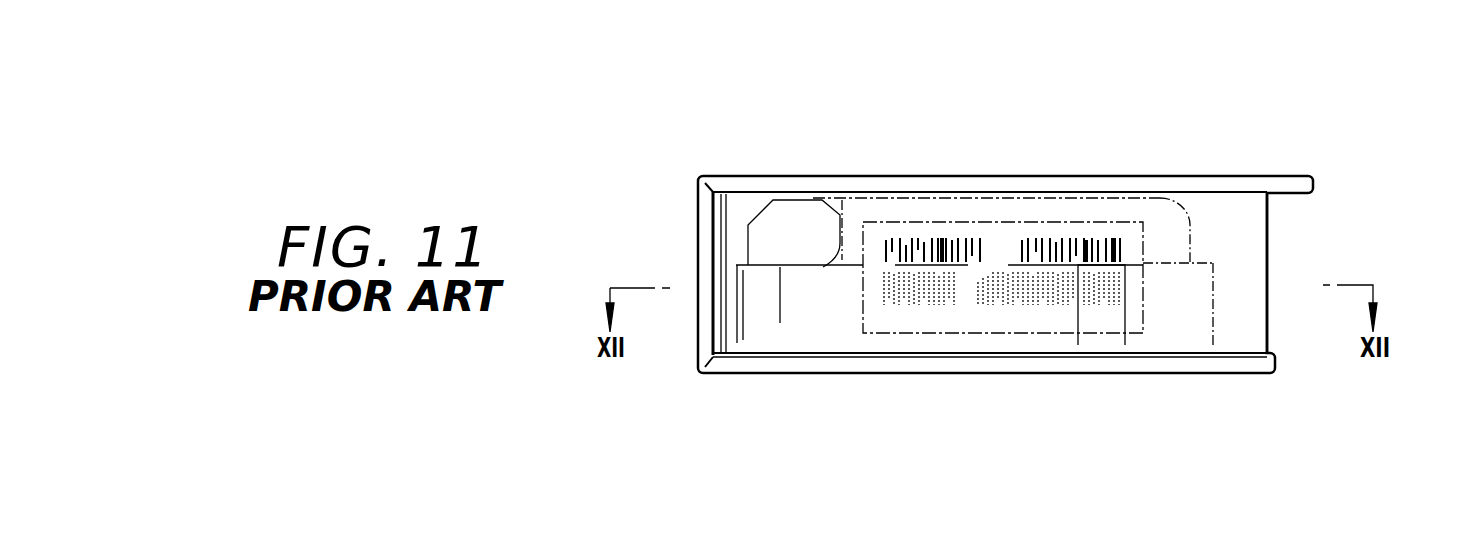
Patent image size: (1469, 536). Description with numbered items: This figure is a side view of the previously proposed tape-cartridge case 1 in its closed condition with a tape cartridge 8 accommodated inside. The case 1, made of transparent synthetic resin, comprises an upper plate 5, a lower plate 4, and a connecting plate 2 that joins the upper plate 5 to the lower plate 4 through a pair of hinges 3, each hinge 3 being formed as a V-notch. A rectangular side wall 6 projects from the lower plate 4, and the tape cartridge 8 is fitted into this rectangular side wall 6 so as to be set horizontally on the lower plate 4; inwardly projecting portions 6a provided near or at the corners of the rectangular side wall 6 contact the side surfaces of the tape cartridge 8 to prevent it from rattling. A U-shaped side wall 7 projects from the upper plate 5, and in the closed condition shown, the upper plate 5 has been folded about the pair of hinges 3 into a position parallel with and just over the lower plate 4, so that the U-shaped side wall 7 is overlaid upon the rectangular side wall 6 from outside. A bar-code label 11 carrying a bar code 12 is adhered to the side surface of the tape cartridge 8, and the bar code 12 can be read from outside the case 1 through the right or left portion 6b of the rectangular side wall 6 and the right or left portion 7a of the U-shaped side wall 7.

The tape-cartridge case 1 is at (1328, 162).
The connecting plate 2 is at (697, 250).
The hinge 3 is at (712, 187).
The lower plate 4 is at (967, 373).
The upper plate 5 is at (983, 177).
The rectangular side wall 6 is at (1163, 263).
The inwardly projecting portion 6a is at (760, 333).
The right or left portion of the rectangular side wall 6b is at (828, 333).
The U-shaped side wall 7 is at (1252, 205).
The right or left portion of the U-shaped side wall 7a is at (1215, 210).
The tape cartridge 8 is at (1152, 197).
The bar-code label 11 is at (872, 230).
The bar code 12 is at (912, 243).